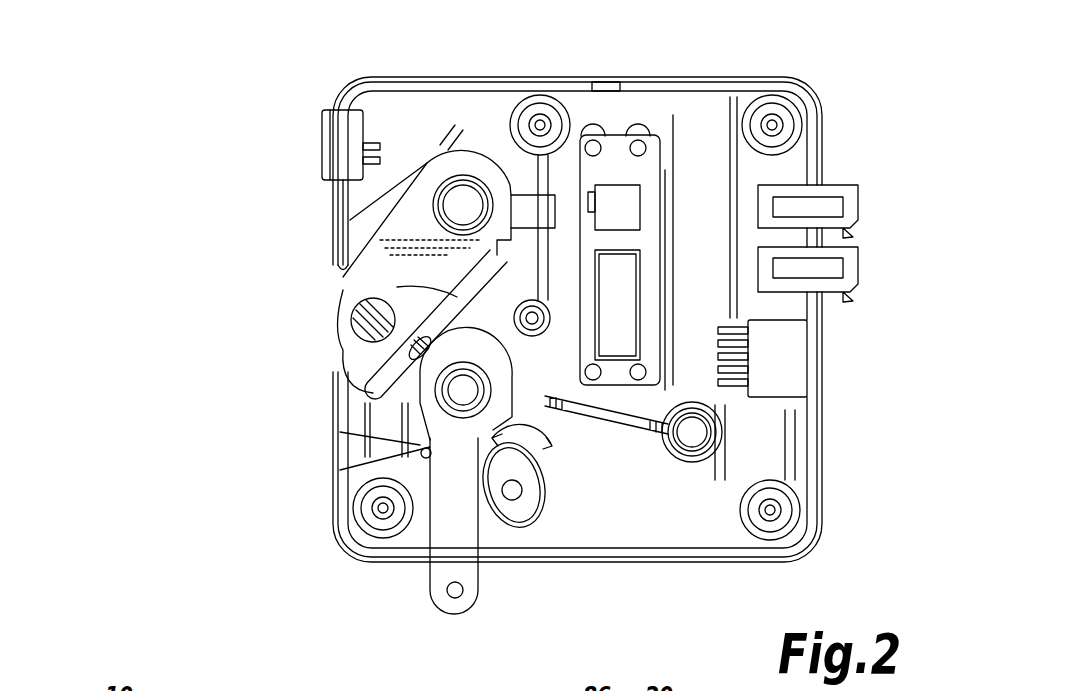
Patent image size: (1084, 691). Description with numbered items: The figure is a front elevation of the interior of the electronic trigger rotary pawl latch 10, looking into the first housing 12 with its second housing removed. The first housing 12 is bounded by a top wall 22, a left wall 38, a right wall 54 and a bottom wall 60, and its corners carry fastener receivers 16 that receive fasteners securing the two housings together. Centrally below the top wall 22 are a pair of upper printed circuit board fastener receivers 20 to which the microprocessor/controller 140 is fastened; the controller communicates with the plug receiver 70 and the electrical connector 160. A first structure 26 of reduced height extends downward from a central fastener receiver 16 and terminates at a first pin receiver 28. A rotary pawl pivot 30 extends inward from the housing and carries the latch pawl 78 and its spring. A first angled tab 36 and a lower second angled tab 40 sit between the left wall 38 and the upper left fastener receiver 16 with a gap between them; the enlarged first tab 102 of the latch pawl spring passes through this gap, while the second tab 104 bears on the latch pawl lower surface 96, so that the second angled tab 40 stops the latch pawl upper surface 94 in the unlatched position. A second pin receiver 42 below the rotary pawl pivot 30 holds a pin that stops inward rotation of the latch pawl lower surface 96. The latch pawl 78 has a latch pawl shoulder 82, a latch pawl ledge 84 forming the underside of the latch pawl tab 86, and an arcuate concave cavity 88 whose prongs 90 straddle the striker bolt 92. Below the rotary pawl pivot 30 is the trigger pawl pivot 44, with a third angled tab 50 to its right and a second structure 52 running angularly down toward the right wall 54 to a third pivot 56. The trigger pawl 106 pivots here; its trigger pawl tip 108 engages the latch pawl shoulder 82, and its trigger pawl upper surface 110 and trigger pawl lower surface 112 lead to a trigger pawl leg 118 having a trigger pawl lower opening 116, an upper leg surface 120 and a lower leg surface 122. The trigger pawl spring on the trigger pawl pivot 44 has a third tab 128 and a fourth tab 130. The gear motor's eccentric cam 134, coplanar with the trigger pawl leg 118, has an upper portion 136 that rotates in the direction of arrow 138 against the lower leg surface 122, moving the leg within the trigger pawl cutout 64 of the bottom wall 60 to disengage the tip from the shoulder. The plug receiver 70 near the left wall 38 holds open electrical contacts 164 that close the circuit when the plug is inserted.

The rotary pawl latch 10 is at (203, 105).
The first housing 12 is at (705, 130).
The fastener receivers 16 is at (541, 122).
The upper printed circuit board fastener receivers 20 is at (640, 145).
The top wall 22 is at (470, 79).
The first structure 26 is at (612, 185).
The first pin receiver 28 is at (580, 430).
The rotary pawl pivot 30 is at (466, 200).
The first angled tab 36 is at (463, 150).
The left wall 38 is at (380, 450).
The second angled tab 40 is at (357, 118).
The second pin receiver 42 is at (440, 392).
The trigger pawl pivot 44 is at (350, 462).
The third angled tab 50 is at (555, 400).
The second structure 52 is at (625, 440).
The right wall 54 is at (822, 435).
The third pivot 56 is at (697, 432).
The bottom wall 60 is at (740, 555).
The trigger pawl cutout 64 is at (420, 553).
The plug receiver 70 is at (322, 140).
The latch pawl 78 is at (420, 262).
The latch pawl shoulder 82 is at (530, 205).
The latch pawl ledge 84 is at (436, 324).
The latch pawl tab 86 is at (548, 240).
The arcuate concave cavity 88 is at (395, 320).
The prongs 90 is at (340, 318).
The striker bolt 92 is at (368, 338).
The latch pawl upper surface 94 is at (410, 262).
The latch pawl lower surface 96 is at (345, 456).
The first tab 102 is at (445, 135).
The second tab 104 is at (375, 372).
The trigger pawl 106 is at (518, 332).
The trigger pawl tip 108 is at (400, 222).
The trigger pawl upper surface 110 is at (410, 342).
The trigger pawl lower surface 112 is at (605, 440).
The trigger pawl lower opening 116 is at (455, 598).
The trigger pawl leg 118 is at (454, 526).
The upper leg surface 120 is at (350, 505).
The lower leg surface 122 is at (478, 560).
The third tab 128 is at (430, 300).
The fourth tab 130 is at (380, 462).
The eccentric cam 134 is at (520, 500).
The upper portion 136 is at (372, 560).
The arrow 138 is at (545, 470).
The microprocessor/controller 140 is at (640, 283).
The electrical connector 160 is at (790, 350).
The open electrical contacts 164 is at (358, 123).